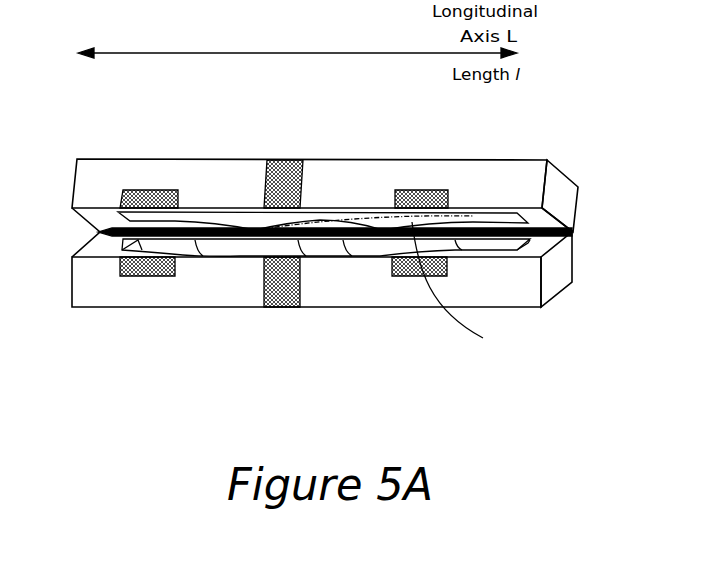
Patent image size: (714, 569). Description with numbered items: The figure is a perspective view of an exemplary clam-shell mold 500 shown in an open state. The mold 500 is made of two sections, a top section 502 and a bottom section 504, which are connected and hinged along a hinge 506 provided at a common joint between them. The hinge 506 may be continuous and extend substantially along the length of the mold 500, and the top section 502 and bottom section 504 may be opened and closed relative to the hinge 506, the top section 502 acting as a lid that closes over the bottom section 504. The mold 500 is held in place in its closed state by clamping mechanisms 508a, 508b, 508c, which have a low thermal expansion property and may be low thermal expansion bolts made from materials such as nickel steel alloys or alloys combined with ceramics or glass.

The mold 500 is at (336, 276).
The top section 502 is at (538, 158).
The bottom section 504 is at (557, 277).
The hinge 506 is at (560, 230).
The clamping mechanism 508a is at (132, 268).
The clamping mechanism 508b is at (410, 272).
The clamping mechanism 508c is at (273, 295).